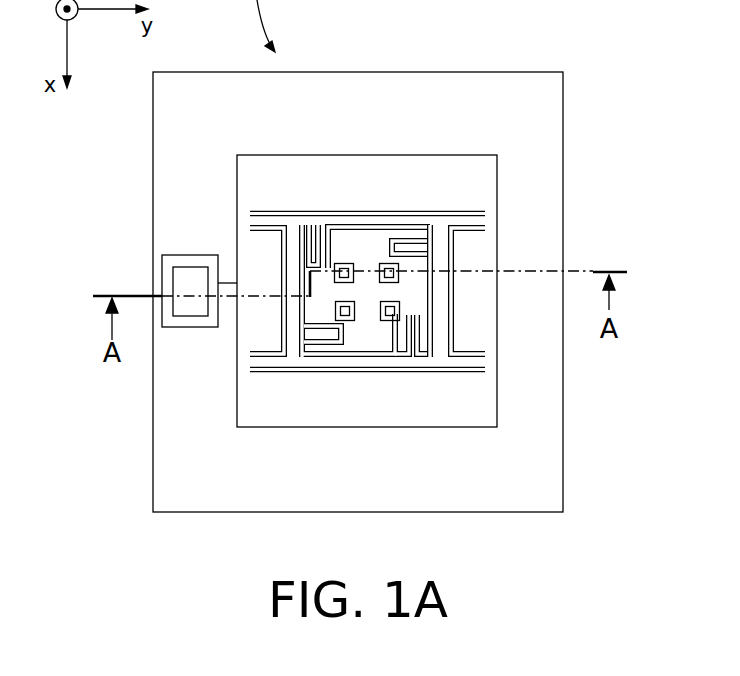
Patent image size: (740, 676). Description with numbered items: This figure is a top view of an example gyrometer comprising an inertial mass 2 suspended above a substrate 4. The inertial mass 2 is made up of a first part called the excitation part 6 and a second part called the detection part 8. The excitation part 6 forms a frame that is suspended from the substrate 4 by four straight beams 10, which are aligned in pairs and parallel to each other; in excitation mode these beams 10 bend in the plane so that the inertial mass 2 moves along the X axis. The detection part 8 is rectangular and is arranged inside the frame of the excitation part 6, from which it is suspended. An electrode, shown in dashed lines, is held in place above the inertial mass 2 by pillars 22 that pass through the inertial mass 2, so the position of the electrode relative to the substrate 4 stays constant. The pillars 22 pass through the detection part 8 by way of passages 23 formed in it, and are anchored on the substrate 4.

The inertial mass 2 is at (431, 196).
The substrate 4 is at (563, 203).
The excitation part 6 is at (358, 372).
The detection part 8 is at (413, 291).
The straight beams 10 is at (268, 211).
The pillars 22 is at (389, 264).
The passages 23 is at (389, 322).